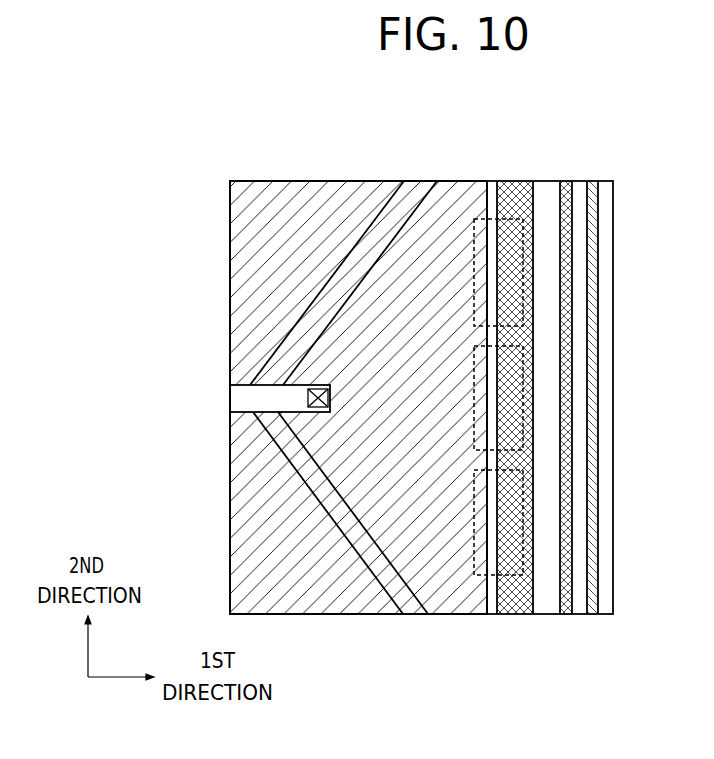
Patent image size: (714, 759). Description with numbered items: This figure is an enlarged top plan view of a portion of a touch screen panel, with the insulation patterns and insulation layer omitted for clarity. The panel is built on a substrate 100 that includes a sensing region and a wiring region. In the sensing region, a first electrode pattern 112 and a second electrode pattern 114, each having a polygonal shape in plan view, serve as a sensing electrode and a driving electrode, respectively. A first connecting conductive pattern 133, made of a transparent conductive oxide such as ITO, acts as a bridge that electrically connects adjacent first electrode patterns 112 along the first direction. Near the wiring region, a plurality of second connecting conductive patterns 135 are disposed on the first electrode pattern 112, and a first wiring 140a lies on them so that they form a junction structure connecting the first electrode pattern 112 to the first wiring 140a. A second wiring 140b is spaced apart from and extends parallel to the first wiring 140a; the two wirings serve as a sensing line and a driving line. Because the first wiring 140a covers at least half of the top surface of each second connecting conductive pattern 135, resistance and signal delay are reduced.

The substrate 100 is at (415, 612).
The first electrode pattern 112 is at (375, 510).
The second electrode pattern 114 is at (243, 276).
The first connecting conductive pattern 133 is at (243, 416).
The second connecting conductive patterns 135 is at (474, 243).
The first wiring 140a is at (518, 206).
The second wiring 140b is at (565, 615).